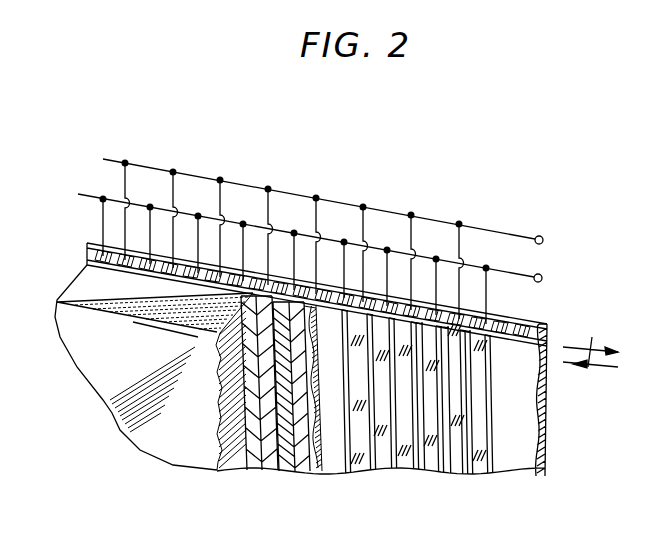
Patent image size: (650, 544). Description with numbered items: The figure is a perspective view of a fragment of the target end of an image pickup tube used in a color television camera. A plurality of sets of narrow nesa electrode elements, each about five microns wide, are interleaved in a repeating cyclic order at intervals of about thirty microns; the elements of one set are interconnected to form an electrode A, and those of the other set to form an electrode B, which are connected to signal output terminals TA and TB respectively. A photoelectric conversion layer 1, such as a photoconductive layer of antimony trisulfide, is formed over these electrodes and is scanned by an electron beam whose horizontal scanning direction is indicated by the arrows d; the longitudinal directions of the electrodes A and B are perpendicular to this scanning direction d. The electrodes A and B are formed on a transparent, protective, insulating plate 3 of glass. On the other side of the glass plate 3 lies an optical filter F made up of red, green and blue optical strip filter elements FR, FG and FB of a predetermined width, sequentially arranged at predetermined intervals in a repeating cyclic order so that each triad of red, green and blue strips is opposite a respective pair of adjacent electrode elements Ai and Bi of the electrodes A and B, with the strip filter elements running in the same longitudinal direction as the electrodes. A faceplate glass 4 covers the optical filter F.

The photoelectric conversion layer 1 is at (523, 442).
The transparent protective insulating plate 3 is at (173, 275).
The faceplate glass 4 is at (83, 282).
The optical filter F is at (300, 142).
The red optical strip filter element FR is at (271, 300).
The green optical strip filter element FG is at (291, 300).
The blue optical strip filter element FB is at (311, 305).
The electrode A is at (400, 173).
The electrode element Ai is at (366, 292).
The electrode B is at (498, 191).
The electrode element Bi is at (385, 303).
The signal output terminal TA is at (542, 236).
The signal output terminal TB is at (541, 275).
The electron beam horizontal scanning direction d is at (590, 339).